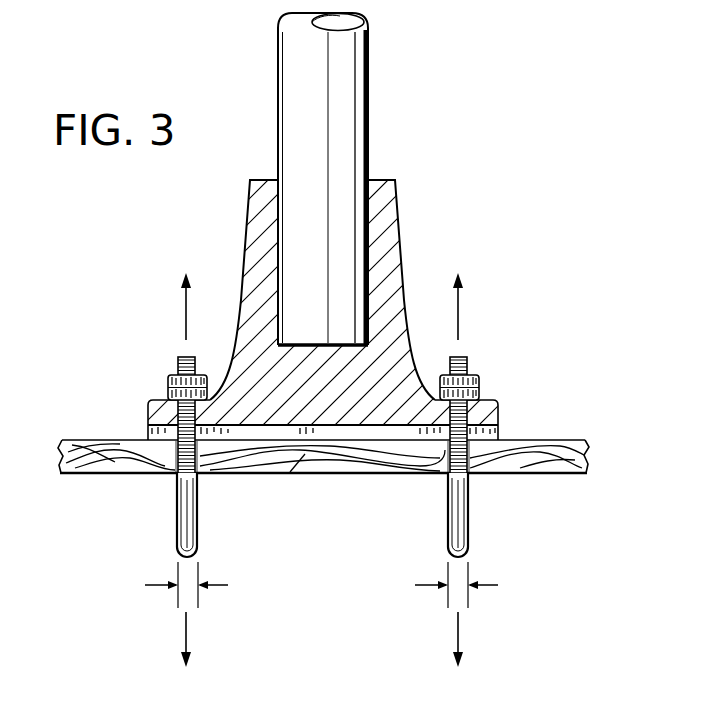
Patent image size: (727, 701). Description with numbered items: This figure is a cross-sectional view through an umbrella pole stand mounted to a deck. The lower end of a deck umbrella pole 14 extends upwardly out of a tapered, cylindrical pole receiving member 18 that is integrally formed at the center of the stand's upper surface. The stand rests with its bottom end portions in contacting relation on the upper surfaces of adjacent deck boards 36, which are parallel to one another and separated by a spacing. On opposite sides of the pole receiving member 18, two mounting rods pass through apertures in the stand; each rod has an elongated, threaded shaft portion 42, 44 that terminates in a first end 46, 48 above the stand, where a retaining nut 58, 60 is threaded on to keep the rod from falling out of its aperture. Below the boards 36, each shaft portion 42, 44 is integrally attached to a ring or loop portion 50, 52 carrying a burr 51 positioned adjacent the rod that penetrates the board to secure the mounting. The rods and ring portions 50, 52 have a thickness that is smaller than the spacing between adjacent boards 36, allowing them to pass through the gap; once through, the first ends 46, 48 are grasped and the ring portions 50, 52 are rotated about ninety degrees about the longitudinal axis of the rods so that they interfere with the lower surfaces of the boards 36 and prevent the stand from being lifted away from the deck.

The deck umbrella pole 14 is at (347, 88).
The pole receiving member 18 is at (392, 251).
The boards 36 is at (73, 470).
The threaded shaft portion 42 is at (175, 433).
The threaded shaft portion 44 is at (495, 433).
The first end 46 is at (178, 349).
The first end 48 is at (468, 348).
The ring portion 50 is at (177, 502).
The first burr 51 is at (194, 468).
The ring portion 52 is at (469, 528).
The nut 58 is at (168, 385).
The nut 60 is at (479, 385).